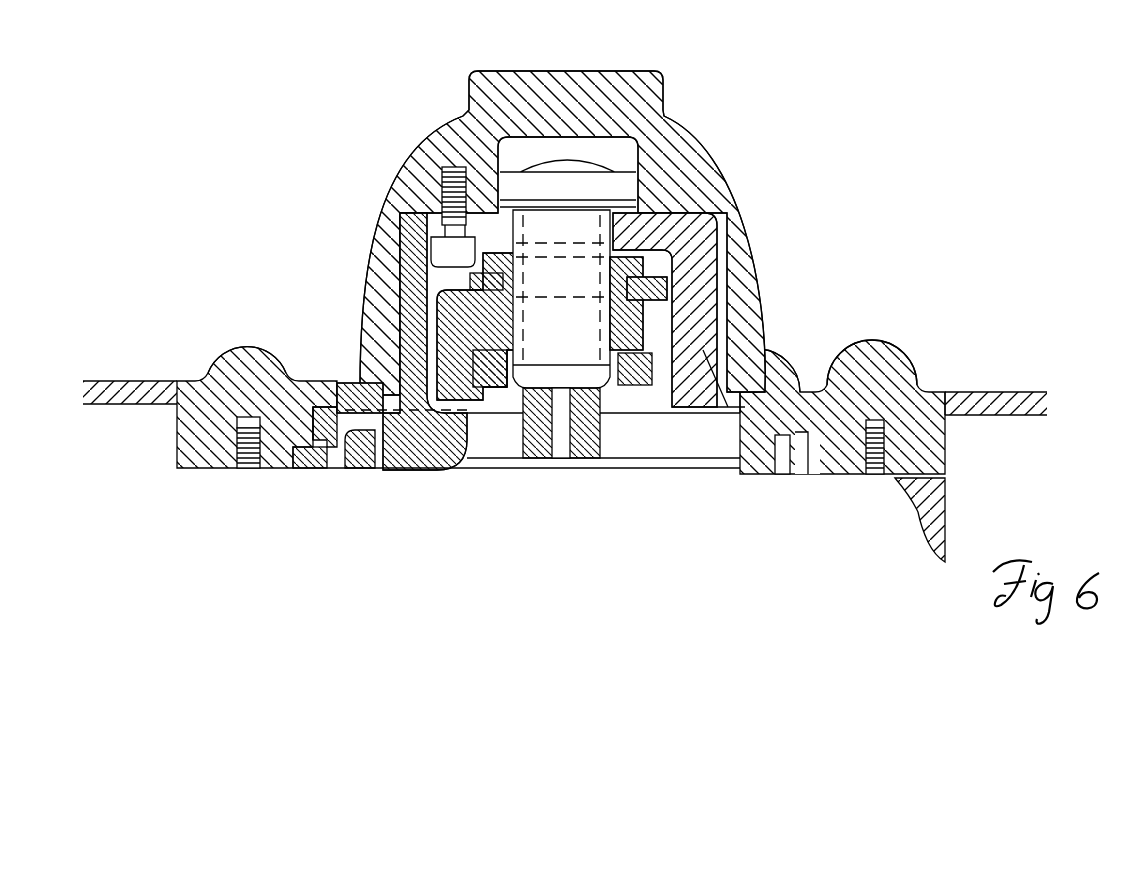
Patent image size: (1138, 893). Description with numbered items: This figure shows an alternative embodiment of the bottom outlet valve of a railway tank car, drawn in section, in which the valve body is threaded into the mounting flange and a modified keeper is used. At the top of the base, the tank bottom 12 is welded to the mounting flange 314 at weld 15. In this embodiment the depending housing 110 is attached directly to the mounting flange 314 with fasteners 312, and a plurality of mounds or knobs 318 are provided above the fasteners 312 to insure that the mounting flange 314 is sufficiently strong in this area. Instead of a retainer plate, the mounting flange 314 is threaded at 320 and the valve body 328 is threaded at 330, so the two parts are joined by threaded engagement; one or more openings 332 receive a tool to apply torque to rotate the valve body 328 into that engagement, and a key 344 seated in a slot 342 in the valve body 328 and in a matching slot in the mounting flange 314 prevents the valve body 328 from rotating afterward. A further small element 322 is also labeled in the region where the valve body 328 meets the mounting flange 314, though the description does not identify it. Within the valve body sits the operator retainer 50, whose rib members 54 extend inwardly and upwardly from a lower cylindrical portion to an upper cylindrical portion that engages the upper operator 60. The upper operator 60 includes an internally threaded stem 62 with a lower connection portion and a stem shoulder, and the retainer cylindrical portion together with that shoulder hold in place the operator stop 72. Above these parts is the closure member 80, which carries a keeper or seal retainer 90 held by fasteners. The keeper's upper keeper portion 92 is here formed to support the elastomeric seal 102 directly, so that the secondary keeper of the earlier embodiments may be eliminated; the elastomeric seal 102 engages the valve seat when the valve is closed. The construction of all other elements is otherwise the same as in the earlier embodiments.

The tank bottom 12 is at (1002, 392).
The weld 15 is at (950, 415).
The operator retainer 50 is at (455, 452).
The rib members 54 is at (480, 338).
The upper operator 60 is at (603, 448).
The stem 62 is at (580, 333).
The operator stop 72 is at (612, 285).
The closure member 80 is at (728, 182).
The keeper or seal retainer 90 is at (698, 243).
The upper keeper portion 92 is at (690, 413).
The elastomeric seal 102 is at (800, 362).
The depending housing 110 is at (950, 495).
The fasteners 312 is at (212, 468).
The mounting flange 314 is at (950, 443).
The mounds or knobs 318 is at (323, 351).
The threads of mounting flange 320 is at (272, 468).
The gasket 322 is at (327, 423).
The valve body 328 is at (348, 380).
The threads of valve body 330 is at (340, 468).
The openings 332 is at (783, 474).
The slot 342 is at (330, 468).
The key 344 is at (305, 468).